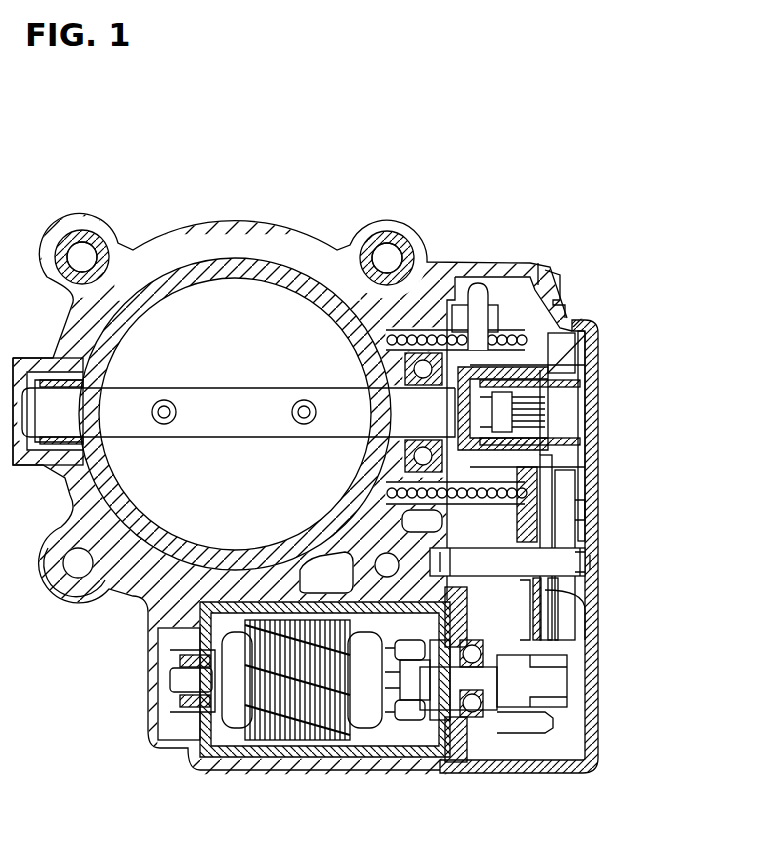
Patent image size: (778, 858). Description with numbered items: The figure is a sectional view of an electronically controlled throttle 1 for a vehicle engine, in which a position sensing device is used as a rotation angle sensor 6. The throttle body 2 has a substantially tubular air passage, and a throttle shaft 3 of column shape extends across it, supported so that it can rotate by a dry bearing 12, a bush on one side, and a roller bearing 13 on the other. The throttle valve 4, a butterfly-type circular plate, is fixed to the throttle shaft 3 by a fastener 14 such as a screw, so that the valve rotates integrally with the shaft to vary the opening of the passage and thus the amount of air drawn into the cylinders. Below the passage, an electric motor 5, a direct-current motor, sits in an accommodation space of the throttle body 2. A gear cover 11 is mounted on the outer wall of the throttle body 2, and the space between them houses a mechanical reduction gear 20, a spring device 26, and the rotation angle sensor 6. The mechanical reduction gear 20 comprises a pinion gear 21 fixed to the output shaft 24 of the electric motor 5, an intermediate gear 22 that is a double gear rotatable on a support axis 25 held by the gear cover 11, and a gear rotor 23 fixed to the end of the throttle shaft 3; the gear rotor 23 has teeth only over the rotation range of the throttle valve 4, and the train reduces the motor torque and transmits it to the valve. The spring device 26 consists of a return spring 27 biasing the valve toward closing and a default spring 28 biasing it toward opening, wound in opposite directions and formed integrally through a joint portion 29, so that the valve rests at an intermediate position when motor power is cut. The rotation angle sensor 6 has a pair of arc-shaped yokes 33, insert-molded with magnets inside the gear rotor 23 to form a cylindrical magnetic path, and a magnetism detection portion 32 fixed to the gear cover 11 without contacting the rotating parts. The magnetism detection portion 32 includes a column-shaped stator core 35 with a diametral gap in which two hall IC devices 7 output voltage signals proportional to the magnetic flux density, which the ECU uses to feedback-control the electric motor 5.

The electronically controlled throttle 1 is at (120, 188).
The throttle body 2 is at (140, 585).
The throttle shaft 3 is at (232, 430).
The throttle valve 4 is at (232, 287).
The electric motor 5 is at (285, 733).
The rotation angle sensor 6 is at (522, 348).
The hall IC devices 7 is at (545, 400).
The gear cover 11 is at (599, 338).
The dry bearing 12 is at (45, 462).
The roller bearing 13 is at (382, 447).
The fastener 14 is at (165, 402).
The mechanical reduction gear 20 is at (652, 490).
The pinion gear 21 is at (560, 676).
The intermediate gear 22 is at (570, 625).
The gear rotor 23 is at (598, 512).
The output shaft 24 is at (487, 683).
The support axis 25 is at (598, 565).
The spring device 26 is at (437, 207).
The return spring 27 is at (439, 334).
The default spring 28 is at (506, 334).
The joint portion 29 is at (468, 300).
The magnetism detection portion 32 is at (652, 370).
The yokes 33 is at (540, 367).
The stator core 35 is at (545, 373).